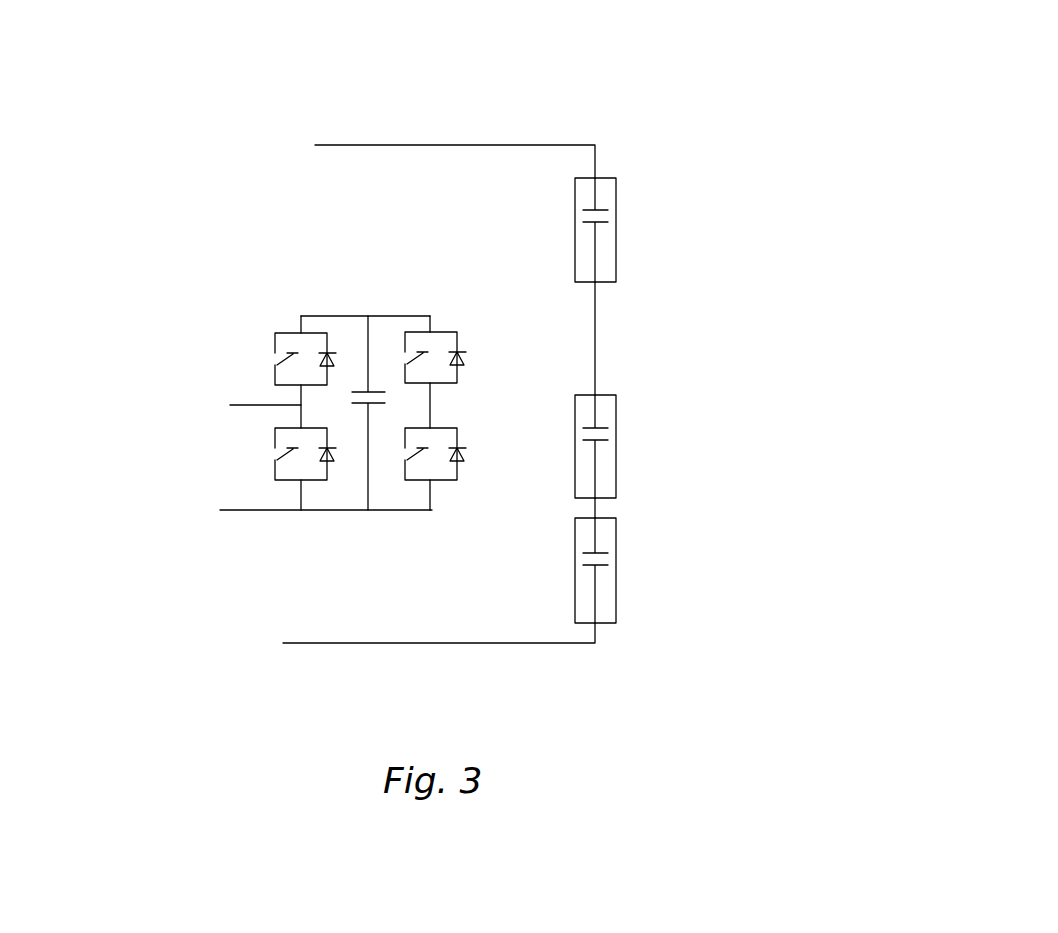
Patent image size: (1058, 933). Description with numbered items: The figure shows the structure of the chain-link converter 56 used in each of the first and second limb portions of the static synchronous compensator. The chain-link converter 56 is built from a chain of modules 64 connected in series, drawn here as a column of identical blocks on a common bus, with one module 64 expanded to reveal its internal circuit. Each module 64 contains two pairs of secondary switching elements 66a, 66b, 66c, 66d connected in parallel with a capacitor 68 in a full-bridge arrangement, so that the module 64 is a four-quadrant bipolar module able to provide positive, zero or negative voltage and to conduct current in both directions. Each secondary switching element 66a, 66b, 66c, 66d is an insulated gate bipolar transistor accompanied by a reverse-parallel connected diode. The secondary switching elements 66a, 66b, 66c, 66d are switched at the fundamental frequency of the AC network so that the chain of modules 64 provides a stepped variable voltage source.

The chain-link converter 56 is at (607, 134).
The module 64 is at (470, 400).
The secondary switching element 66a is at (274, 355).
The secondary switching element 66b is at (410, 352).
The secondary switching element 66c is at (278, 452).
The secondary switching element 66d is at (424, 512).
The capacitor 68 is at (358, 386).